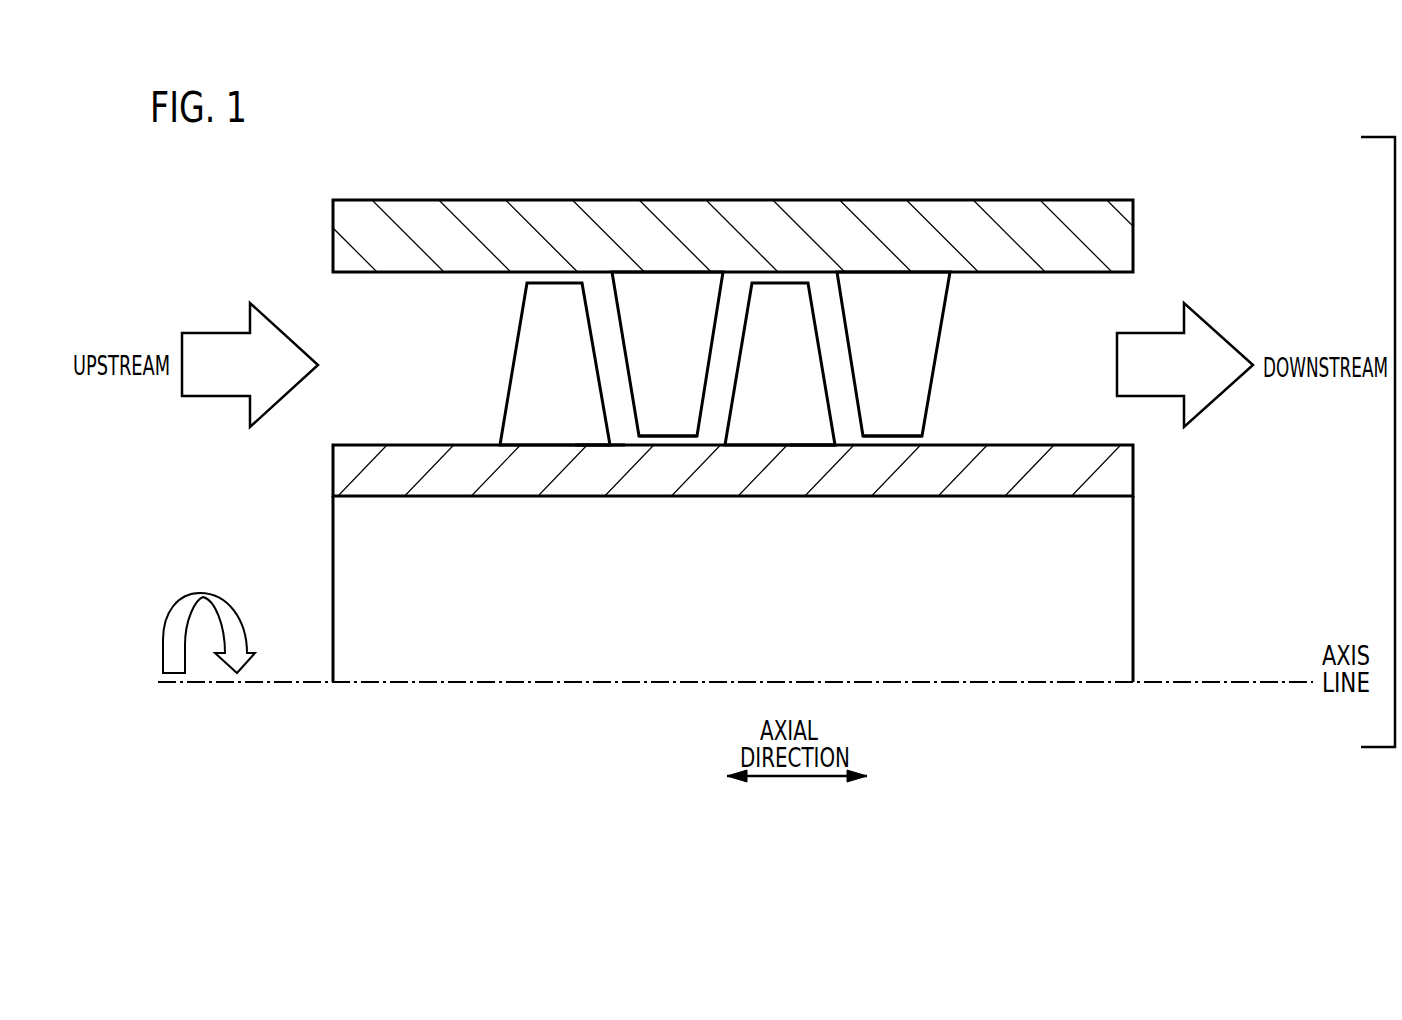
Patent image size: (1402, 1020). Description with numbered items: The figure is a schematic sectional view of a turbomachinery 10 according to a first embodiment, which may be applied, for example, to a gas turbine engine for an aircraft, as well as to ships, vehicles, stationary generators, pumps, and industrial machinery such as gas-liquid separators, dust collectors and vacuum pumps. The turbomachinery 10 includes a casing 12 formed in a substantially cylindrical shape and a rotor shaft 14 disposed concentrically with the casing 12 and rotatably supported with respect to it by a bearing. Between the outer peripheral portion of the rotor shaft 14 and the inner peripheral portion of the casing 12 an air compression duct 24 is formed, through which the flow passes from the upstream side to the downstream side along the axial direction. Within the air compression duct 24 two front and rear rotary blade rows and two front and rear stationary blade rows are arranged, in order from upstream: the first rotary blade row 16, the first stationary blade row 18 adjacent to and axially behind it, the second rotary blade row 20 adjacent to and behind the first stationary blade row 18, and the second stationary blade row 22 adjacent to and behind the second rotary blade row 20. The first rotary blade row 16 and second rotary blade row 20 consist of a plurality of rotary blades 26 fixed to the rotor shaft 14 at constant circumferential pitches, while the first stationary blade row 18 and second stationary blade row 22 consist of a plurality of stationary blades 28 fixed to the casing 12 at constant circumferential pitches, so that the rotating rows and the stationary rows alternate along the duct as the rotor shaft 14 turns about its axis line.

The turbomachinery 10 is at (365, 138).
The casing 12 is at (333, 234).
The rotor shaft 14 is at (332, 473).
The first rotary blade row 16 is at (598, 447).
The first stationary blade row 18 is at (667, 270).
The second rotary blade row 20 is at (810, 447).
The second stationary blade row 22 is at (880, 270).
The air compression duct 24 is at (448, 378).
The rotary blades 26 is at (548, 430).
The stationary blades 28 is at (672, 428).